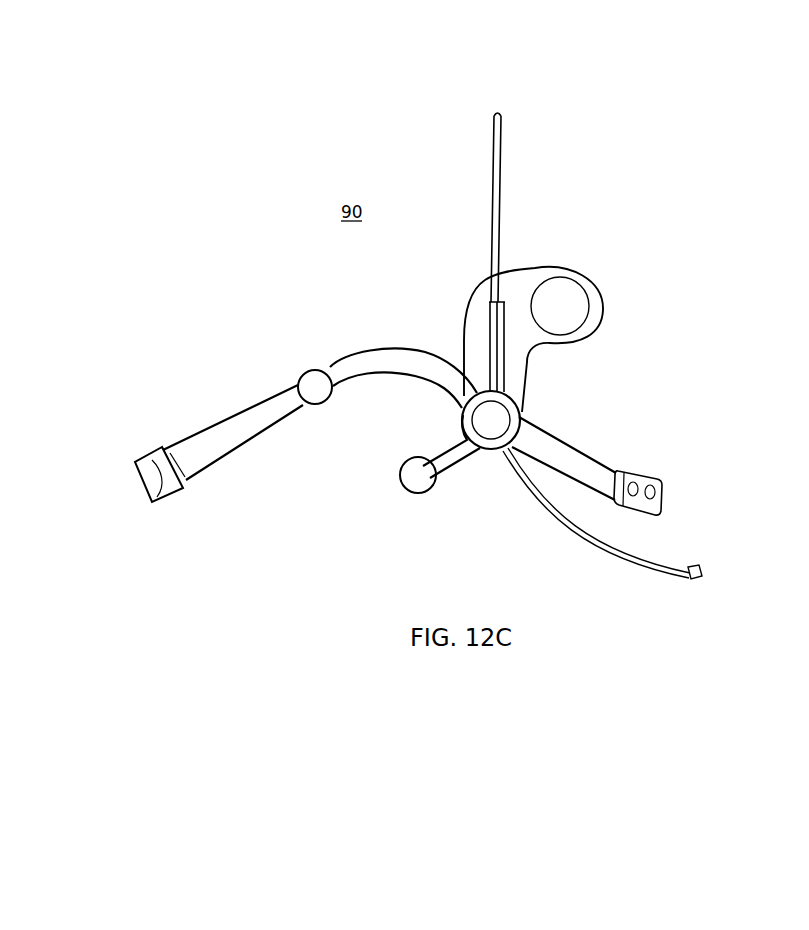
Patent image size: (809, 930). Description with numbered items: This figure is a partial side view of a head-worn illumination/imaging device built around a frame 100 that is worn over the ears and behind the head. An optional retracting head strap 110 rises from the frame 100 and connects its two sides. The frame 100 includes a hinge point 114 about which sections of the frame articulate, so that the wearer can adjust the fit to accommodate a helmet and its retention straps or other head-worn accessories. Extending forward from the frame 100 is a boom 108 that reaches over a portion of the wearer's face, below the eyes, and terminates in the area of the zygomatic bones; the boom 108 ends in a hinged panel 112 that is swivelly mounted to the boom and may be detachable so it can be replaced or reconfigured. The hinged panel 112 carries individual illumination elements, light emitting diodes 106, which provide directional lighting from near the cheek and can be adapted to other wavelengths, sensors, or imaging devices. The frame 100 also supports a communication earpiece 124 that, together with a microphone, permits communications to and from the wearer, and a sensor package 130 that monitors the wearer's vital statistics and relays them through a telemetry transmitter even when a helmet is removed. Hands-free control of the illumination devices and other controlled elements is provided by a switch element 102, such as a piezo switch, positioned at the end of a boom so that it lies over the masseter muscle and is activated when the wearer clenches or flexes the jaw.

The frame 100 is at (203, 448).
The switch element 102 is at (703, 571).
The light emitting diodes 106 is at (634, 484).
The boom 108 is at (553, 458).
The retracting head strap 110 is at (500, 138).
The hinged panel 112 is at (662, 498).
The hinge point 114 is at (298, 383).
The communication earpiece 124 is at (411, 483).
The sensor package 130 is at (573, 300).